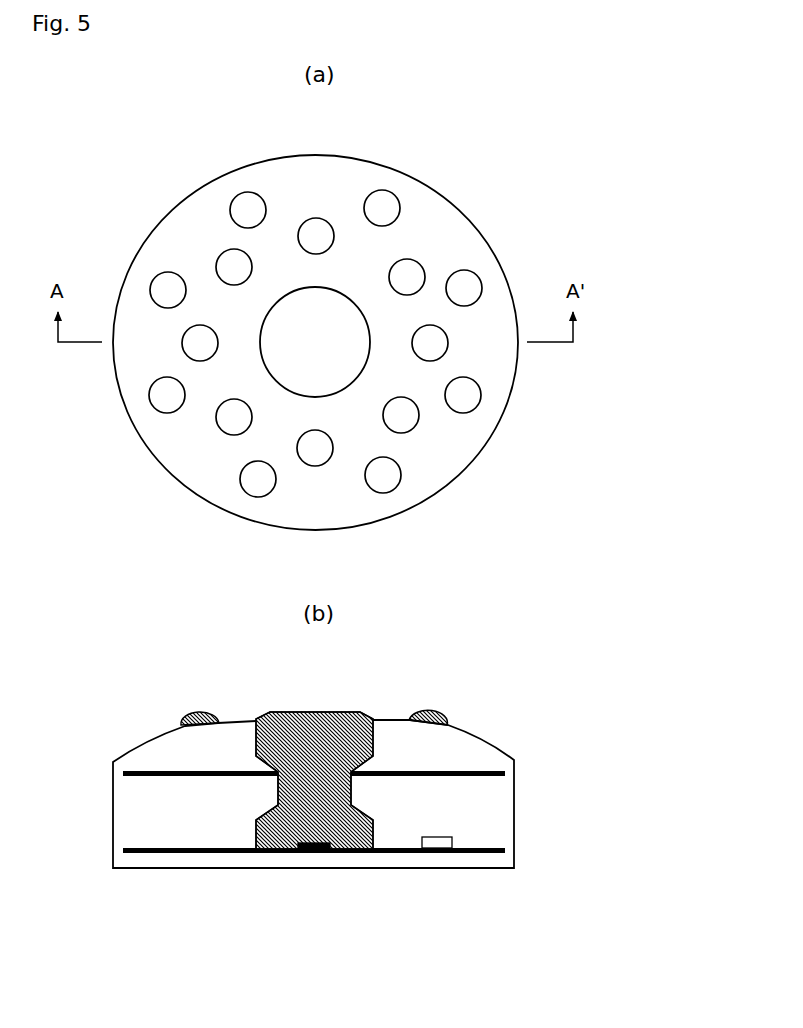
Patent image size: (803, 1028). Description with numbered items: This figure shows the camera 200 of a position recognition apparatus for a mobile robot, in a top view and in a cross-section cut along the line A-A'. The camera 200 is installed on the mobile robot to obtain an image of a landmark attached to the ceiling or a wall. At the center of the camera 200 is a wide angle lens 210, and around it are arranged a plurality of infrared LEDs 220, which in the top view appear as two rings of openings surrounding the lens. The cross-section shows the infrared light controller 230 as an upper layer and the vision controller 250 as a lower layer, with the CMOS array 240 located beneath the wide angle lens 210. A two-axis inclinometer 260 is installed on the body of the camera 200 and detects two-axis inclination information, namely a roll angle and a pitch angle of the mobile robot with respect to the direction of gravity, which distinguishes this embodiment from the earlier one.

The camera 200 is at (417, 178).
The wide angle lens 210 is at (340, 288).
The infrared LEDs 220 is at (477, 278).
The infrared light controller 230 is at (473, 770).
The CMOS array 240 is at (312, 853).
The vision controller 250 is at (477, 850).
The 2-axis inclinometer 260 is at (442, 853).